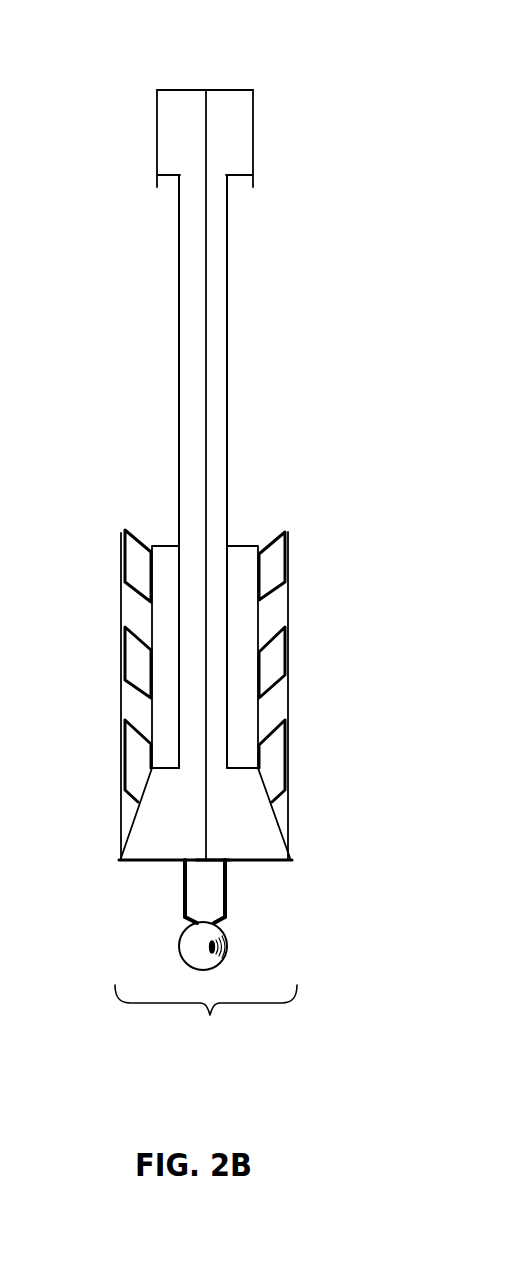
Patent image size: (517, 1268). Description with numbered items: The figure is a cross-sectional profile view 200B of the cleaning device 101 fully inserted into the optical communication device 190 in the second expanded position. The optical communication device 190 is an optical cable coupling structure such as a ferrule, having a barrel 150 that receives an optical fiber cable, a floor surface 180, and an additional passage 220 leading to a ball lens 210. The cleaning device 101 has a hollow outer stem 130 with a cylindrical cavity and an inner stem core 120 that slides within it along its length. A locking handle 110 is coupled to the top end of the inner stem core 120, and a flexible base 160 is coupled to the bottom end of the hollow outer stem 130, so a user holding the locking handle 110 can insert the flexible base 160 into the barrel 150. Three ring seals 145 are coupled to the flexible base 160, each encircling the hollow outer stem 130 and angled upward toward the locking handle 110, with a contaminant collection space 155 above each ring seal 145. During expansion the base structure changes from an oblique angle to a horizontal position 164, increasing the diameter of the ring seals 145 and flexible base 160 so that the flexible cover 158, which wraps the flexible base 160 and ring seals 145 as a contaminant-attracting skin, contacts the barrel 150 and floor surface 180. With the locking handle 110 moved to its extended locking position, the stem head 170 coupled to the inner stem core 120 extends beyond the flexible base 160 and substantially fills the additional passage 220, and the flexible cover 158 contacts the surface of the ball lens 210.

The cross-sectional profile view 200B is at (171, 42).
The cleaning device 101 is at (230, 90).
The locking handle 110 is at (157, 179).
The inner stem core 120 is at (192, 255).
The hollow outer stem 130 is at (178, 318).
The horizontal position 164 is at (165, 545).
The barrel 150 is at (118, 694).
The ring seal 145 is at (122, 552).
The contaminant collection space 155 is at (281, 701).
The flexible base 160 is at (137, 796).
The floor surface 180 is at (120, 860).
The stem head 170 is at (218, 858).
The additional passage 220 is at (172, 865).
The flexible cover 158 is at (125, 768).
The ball lens 210 is at (230, 947).
The optical communication device 190 is at (206, 1018).